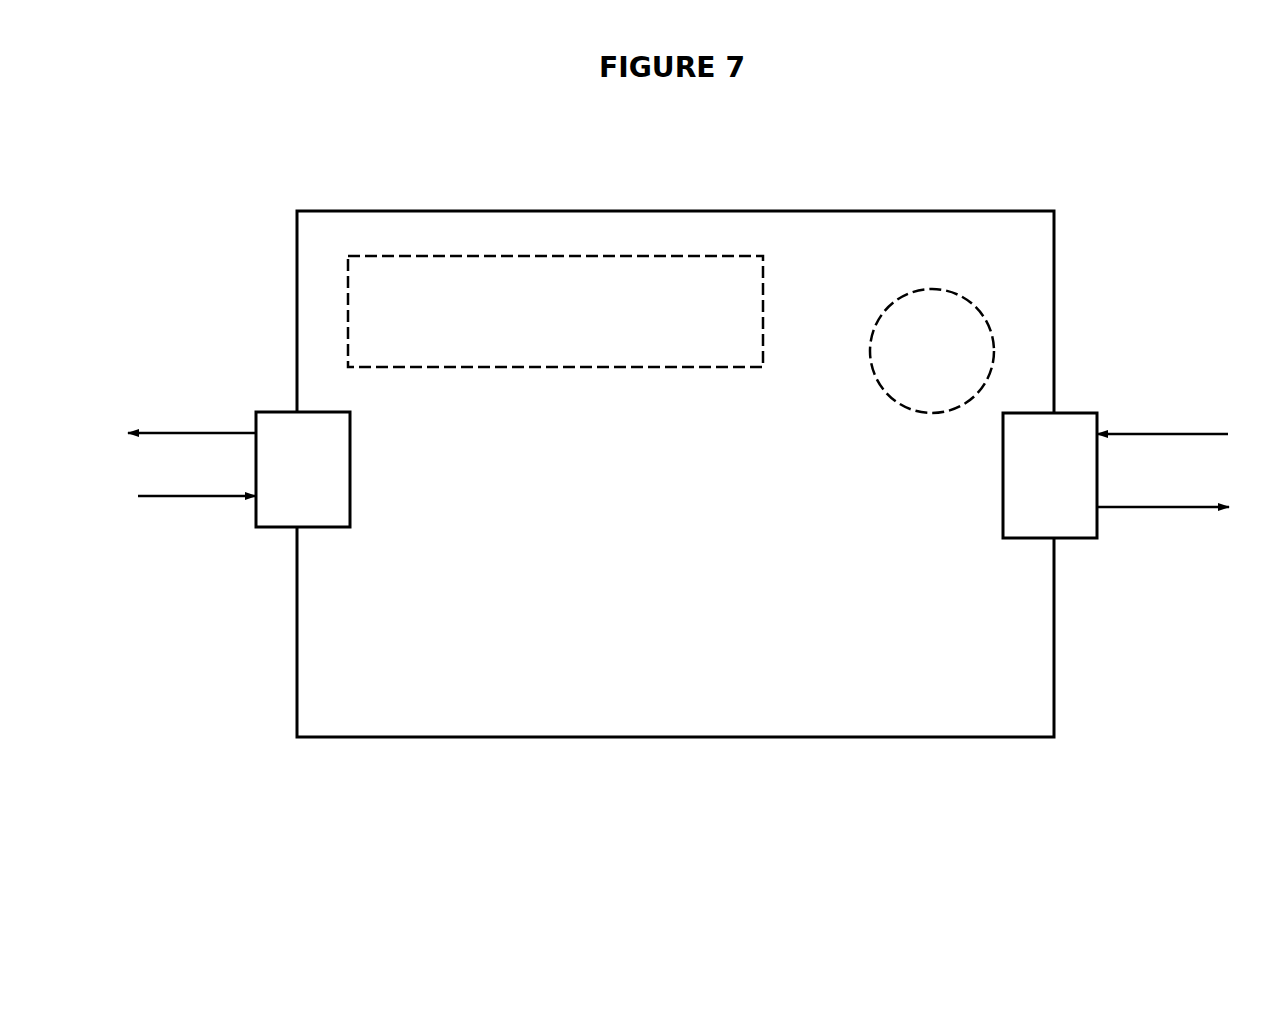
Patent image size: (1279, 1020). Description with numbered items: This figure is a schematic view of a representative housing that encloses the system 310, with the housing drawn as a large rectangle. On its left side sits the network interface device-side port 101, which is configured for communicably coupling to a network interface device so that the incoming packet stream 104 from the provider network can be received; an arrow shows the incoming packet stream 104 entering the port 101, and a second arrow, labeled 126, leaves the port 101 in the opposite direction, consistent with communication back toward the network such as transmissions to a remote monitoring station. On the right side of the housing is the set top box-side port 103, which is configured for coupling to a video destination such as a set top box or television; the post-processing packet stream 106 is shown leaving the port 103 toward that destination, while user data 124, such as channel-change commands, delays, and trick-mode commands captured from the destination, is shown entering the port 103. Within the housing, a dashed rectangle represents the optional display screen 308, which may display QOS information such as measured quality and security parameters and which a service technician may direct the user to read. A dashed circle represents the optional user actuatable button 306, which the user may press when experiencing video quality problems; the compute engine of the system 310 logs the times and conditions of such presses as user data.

The system 310 is at (983, 211).
The display screen 308 is at (525, 322).
The button 306 is at (914, 366).
The NID-side port 101 is at (279, 464).
The STB-side port 103 is at (1034, 484).
The outgoing flow arrow 126 is at (192, 416).
The incoming packet stream 104 is at (197, 479).
The user data 124 is at (1162, 417).
The post-processing packet stream 106 is at (1163, 490).